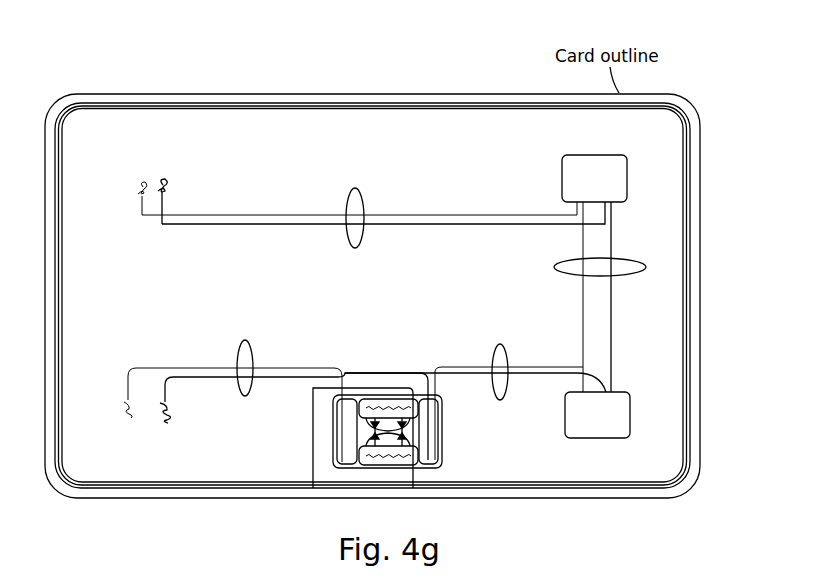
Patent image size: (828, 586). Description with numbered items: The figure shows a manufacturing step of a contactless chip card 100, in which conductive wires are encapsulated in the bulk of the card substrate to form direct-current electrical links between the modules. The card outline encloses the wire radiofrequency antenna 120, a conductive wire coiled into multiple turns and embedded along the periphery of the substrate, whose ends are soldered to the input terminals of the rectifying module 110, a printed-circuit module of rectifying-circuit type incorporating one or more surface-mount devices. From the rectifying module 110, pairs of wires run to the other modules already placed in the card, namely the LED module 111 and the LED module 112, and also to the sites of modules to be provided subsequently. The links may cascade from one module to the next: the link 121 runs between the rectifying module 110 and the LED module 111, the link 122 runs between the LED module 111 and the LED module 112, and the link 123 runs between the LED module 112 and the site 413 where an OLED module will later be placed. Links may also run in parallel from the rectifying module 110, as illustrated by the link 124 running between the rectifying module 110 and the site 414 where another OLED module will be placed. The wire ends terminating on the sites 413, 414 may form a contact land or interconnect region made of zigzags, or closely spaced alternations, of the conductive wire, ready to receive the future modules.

The contactless chip card 100 is at (246, 72).
The wire radiofrequency antenna 120 is at (443, 110).
The site where the OLED module will be placed 413 is at (177, 178).
The site where the OLED module will be placed 414 is at (150, 424).
The link 123 is at (354, 207).
The link 124 is at (261, 358).
The link 121 is at (485, 363).
The link 122 is at (578, 267).
The LED module 112 is at (564, 190).
The LED module 111 is at (568, 425).
The rectifying module 110 is at (445, 463).